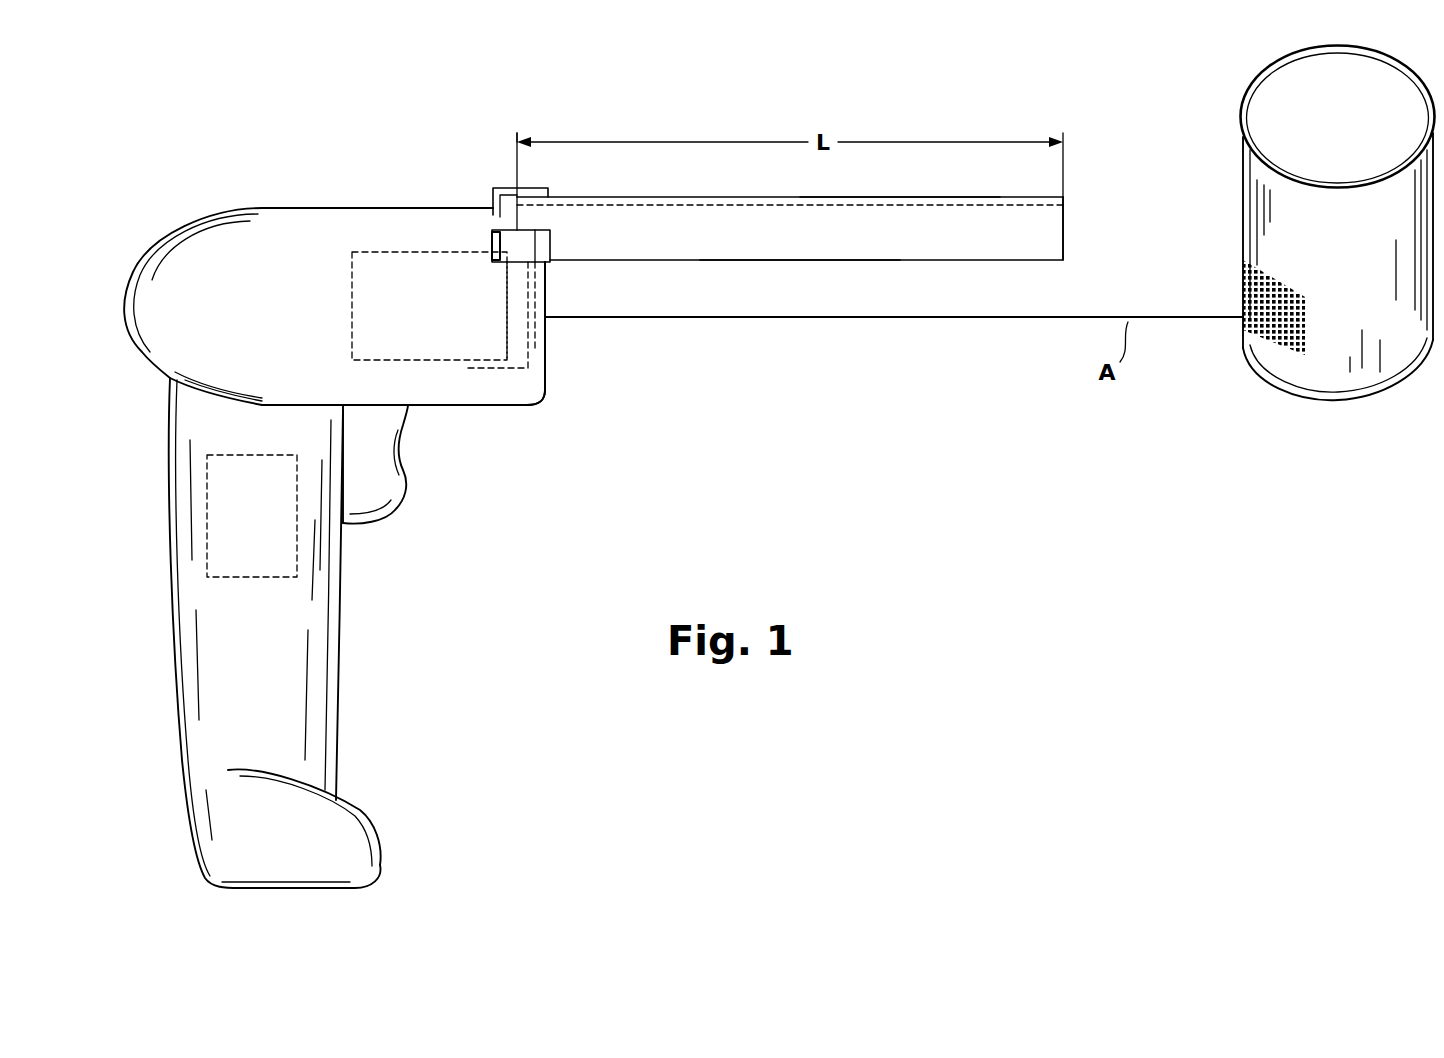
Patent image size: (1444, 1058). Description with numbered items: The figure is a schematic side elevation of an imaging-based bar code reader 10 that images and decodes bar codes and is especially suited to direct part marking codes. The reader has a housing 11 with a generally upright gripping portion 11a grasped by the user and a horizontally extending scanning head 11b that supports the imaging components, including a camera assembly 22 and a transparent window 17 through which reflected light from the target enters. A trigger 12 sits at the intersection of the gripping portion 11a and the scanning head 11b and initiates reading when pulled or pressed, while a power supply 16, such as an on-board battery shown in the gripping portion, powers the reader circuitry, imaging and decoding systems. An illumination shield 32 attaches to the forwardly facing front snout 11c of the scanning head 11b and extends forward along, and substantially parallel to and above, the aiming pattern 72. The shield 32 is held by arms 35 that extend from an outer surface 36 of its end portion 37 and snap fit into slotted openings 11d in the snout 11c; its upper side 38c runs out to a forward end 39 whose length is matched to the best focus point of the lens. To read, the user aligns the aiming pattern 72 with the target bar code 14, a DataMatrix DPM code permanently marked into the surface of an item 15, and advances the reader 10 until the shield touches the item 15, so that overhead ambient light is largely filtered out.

The imaging-based bar code reader 10 is at (522, 108).
The housing 11 is at (146, 398).
The gripping portion 11a is at (190, 800).
The scanning head 11b is at (353, 203).
The front snout 11c is at (548, 350).
The slotted openings 11d is at (495, 213).
The trigger 12 is at (365, 478).
The target bar code 14 is at (1232, 336).
The item 15 is at (1325, 367).
The power supply 16 is at (243, 551).
The transparent window 17 is at (537, 300).
The camera assembly 22 is at (400, 272).
The illumination shield 32 is at (838, 266).
The arms 35 is at (526, 190).
The outer surface 36 is at (763, 243).
The end portion 37 is at (497, 216).
The upper side 38c is at (895, 197).
The forward end 39 is at (1063, 248).
The aiming pattern 72 is at (1143, 316).